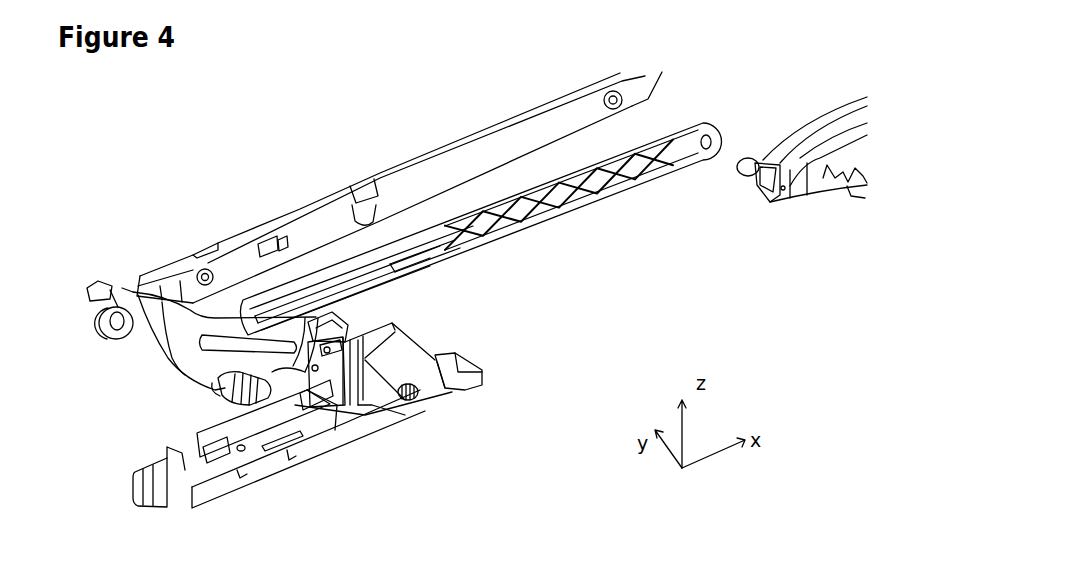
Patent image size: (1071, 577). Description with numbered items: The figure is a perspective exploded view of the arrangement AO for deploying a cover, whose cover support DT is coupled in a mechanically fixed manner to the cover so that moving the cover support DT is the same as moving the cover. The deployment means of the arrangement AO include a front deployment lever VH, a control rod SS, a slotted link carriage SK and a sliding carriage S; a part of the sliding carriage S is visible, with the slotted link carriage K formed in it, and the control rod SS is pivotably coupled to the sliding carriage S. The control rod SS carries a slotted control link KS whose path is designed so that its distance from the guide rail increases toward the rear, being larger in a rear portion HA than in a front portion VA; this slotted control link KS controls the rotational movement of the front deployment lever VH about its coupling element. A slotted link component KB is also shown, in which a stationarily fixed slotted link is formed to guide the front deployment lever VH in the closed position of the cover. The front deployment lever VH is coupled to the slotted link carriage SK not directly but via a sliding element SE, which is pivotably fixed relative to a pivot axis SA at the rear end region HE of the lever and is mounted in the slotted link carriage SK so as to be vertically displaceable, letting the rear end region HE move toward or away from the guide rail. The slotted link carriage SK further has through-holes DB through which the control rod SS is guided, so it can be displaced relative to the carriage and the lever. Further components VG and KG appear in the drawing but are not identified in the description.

The arrangement AO is at (770, 36).
The cover support DT is at (428, 168).
The control rod SS is at (550, 217).
The rear portion HA is at (460, 240).
The front portion VA is at (266, 313).
The slotted control link KS is at (400, 259).
The pivot joint VG is at (108, 340).
The front deployment lever VH is at (176, 366).
The coupling joint KG is at (228, 403).
The sliding element SE is at (348, 328).
The through-holes DB is at (328, 409).
The slotted link carriage SK is at (430, 403).
The slotted link component KB is at (207, 494).
The rear end region HE is at (321, 369).
The pivot axis SA is at (330, 361).
The slotted link carriage K is at (783, 193).
The sliding carriage S is at (828, 181).